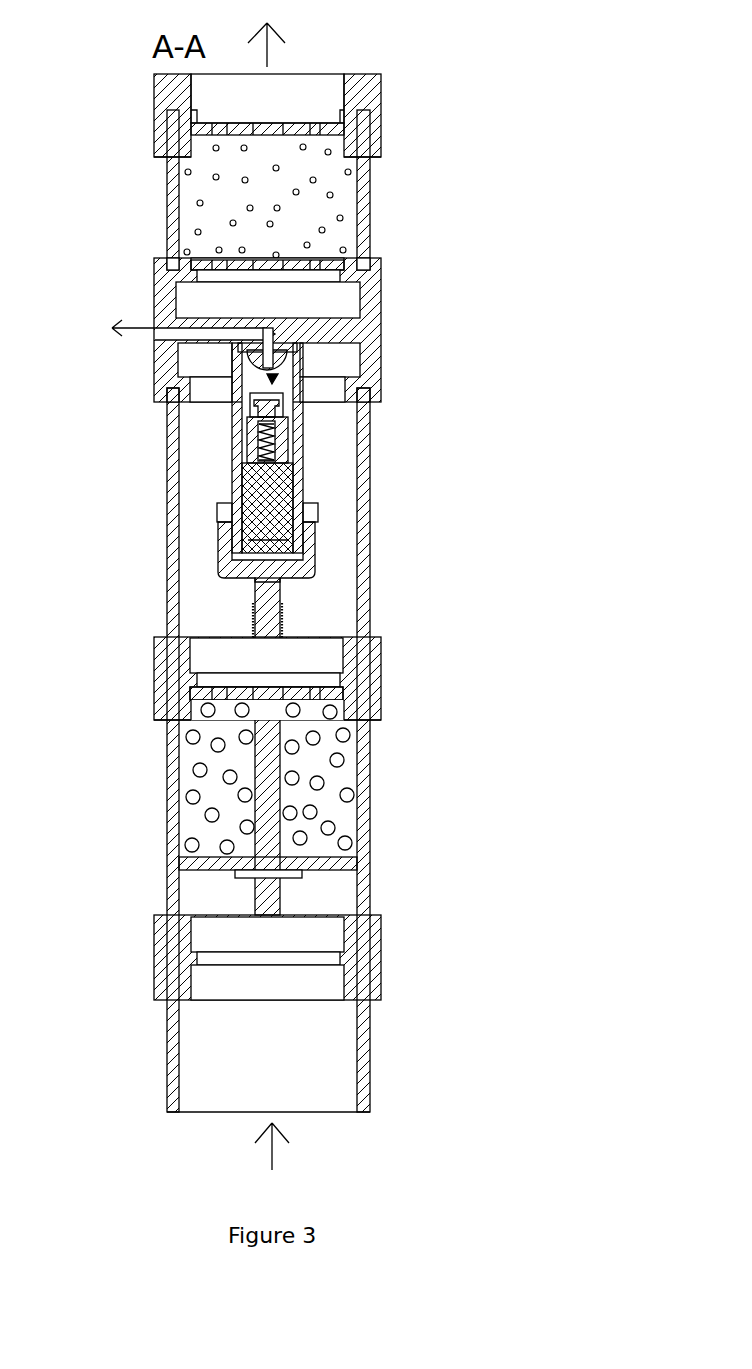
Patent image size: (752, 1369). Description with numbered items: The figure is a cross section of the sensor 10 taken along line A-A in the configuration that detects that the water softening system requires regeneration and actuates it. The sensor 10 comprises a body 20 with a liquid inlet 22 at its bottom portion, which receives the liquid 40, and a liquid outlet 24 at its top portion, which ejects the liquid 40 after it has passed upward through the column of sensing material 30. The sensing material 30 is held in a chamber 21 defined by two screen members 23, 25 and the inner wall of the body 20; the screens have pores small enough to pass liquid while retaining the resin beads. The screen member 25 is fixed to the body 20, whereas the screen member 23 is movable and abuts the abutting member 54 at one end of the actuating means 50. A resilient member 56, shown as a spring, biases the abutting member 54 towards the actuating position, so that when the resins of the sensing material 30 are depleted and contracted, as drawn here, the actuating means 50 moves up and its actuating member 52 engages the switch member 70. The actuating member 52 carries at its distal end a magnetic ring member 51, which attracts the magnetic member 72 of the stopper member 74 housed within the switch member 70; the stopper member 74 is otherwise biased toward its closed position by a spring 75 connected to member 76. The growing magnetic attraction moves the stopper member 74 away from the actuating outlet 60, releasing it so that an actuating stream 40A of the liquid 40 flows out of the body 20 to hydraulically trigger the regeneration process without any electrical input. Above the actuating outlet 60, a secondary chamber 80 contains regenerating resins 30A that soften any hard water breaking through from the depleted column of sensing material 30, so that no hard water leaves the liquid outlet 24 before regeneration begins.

The sensor 10 is at (585, 367).
The body 20 is at (357, 805).
The chamber 21 is at (190, 755).
The liquid inlet 22 is at (310, 1087).
The screen member 23 is at (340, 862).
The liquid outlet 24 is at (292, 88).
The screen member 25 is at (325, 692).
The sensing material 30 is at (340, 760).
The regenerating resins 30A is at (193, 215).
The liquid 40 is at (272, 1160).
The actuating stream 40A is at (277, 383).
The actuating means 50 is at (265, 812).
The magnetic ring member 51 is at (318, 513).
The actuating member 52 is at (316, 553).
The abutting member 54 is at (235, 876).
The resilient member 56 is at (287, 620).
The actuating outlet 60 is at (268, 357).
The switch member 70 is at (296, 414).
The magnetic member 72 is at (250, 437).
The stopper member 74 is at (255, 402).
The spring 75 is at (286, 452).
The member 76 is at (263, 510).
The chamber 80 is at (367, 198).